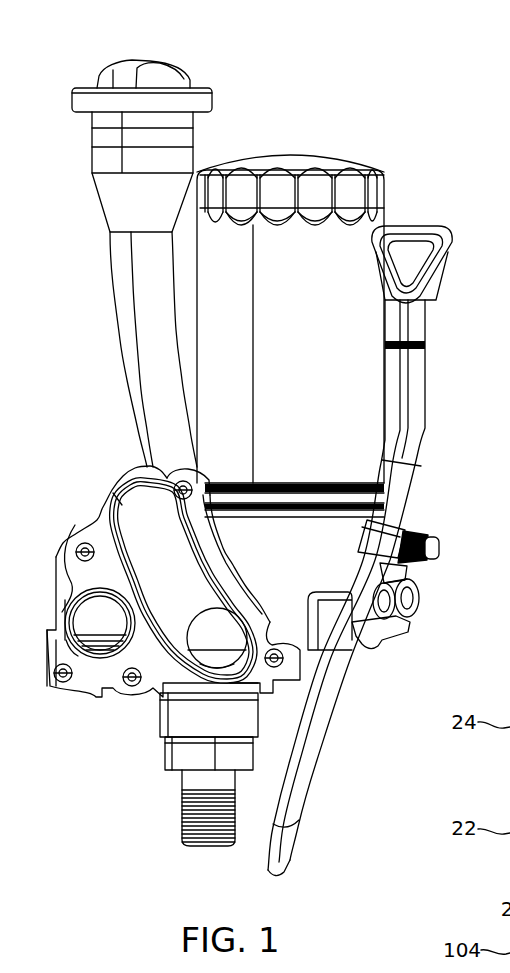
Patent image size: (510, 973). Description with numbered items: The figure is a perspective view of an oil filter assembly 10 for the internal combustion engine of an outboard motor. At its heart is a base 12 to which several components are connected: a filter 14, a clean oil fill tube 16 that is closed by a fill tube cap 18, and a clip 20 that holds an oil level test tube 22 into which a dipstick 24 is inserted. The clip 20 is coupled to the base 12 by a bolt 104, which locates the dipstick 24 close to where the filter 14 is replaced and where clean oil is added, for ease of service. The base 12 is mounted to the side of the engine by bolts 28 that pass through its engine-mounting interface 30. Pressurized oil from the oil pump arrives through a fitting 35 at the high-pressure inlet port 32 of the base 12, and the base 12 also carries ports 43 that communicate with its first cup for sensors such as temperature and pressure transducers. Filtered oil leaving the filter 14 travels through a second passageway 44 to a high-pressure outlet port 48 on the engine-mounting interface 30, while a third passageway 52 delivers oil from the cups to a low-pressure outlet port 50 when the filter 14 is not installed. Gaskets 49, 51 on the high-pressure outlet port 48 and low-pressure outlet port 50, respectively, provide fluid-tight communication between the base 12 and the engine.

The oil filter assembly 10 is at (344, 88).
The base 12 is at (370, 642).
The filter 14 is at (374, 193).
The clean oil fill tube 16 is at (110, 315).
The fill tube cap 18 is at (138, 69).
The clip 20 is at (400, 538).
The oil level test tube 22 is at (428, 390).
The dipstick 24 is at (452, 266).
The bolts 28 is at (177, 487).
The engine-mounting interface 30 is at (80, 579).
The high-pressure inlet port 32 is at (162, 750).
The fitting 35 is at (183, 800).
The ports 43 is at (402, 616).
The second passageway 44 is at (235, 640).
The high-pressure outlet port 48 is at (245, 693).
The gasket 49 is at (123, 497).
The low-pressure outlet port 50 is at (88, 619).
The gasket 51 is at (62, 650).
The third passageway 52 is at (64, 618).
The bolt 104 is at (438, 545).